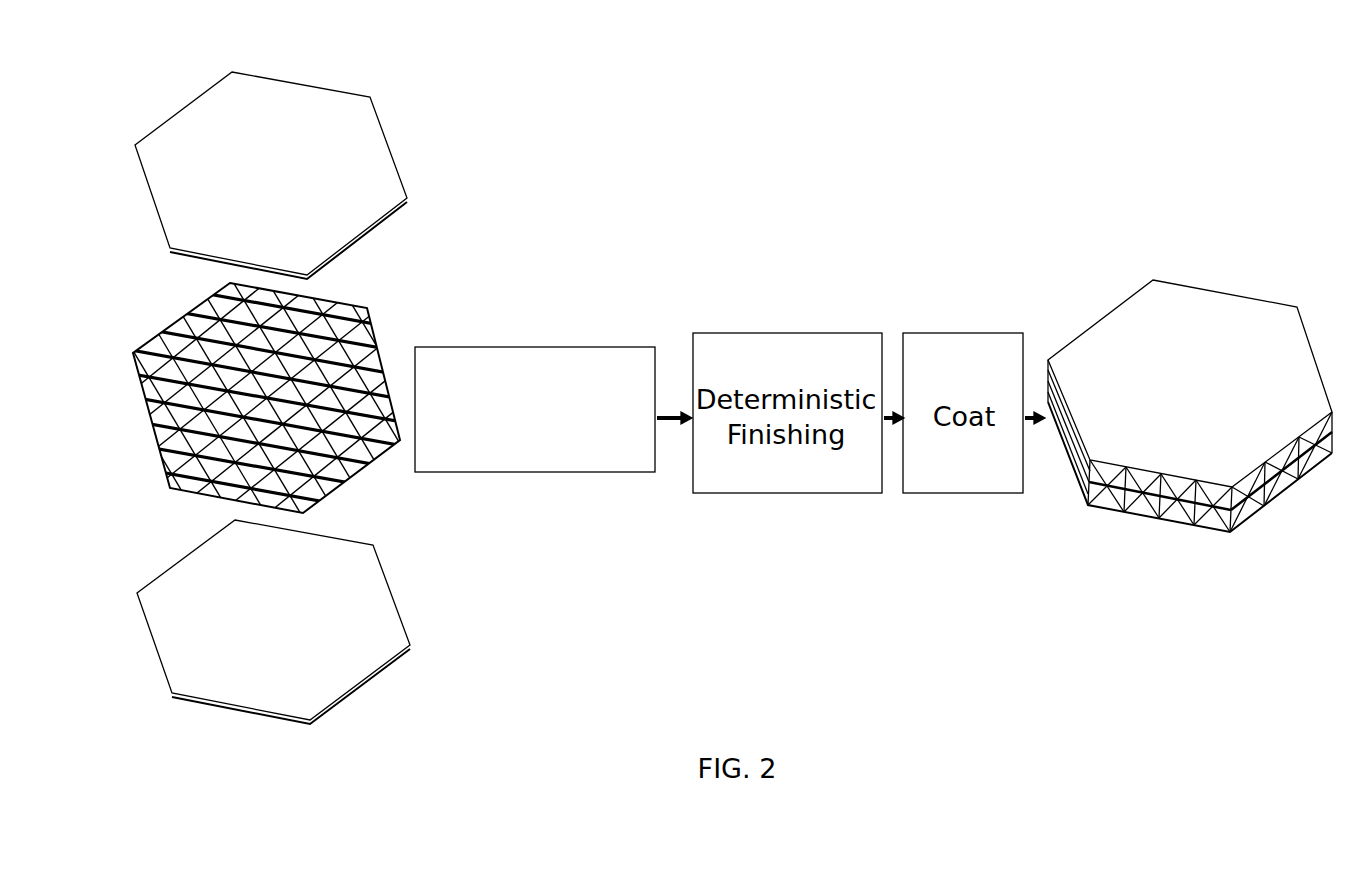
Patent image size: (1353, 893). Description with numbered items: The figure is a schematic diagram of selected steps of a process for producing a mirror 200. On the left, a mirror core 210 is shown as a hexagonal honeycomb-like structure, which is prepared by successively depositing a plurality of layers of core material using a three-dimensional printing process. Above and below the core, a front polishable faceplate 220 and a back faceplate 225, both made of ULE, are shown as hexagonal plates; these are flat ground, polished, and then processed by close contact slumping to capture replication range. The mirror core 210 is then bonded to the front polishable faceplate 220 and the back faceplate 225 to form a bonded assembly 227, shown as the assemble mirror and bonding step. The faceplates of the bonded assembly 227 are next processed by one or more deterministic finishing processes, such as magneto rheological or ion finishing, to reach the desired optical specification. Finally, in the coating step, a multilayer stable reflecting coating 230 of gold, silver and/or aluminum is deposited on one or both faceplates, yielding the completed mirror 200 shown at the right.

The mirror 200 is at (1190, 418).
The mirror core 210 is at (178, 496).
The front polishable faceplate 220 is at (289, 92).
The back faceplate 225 is at (334, 690).
The bonded assembly 227 is at (535, 476).
The multilayer stable reflecting coating 230 is at (1174, 304).